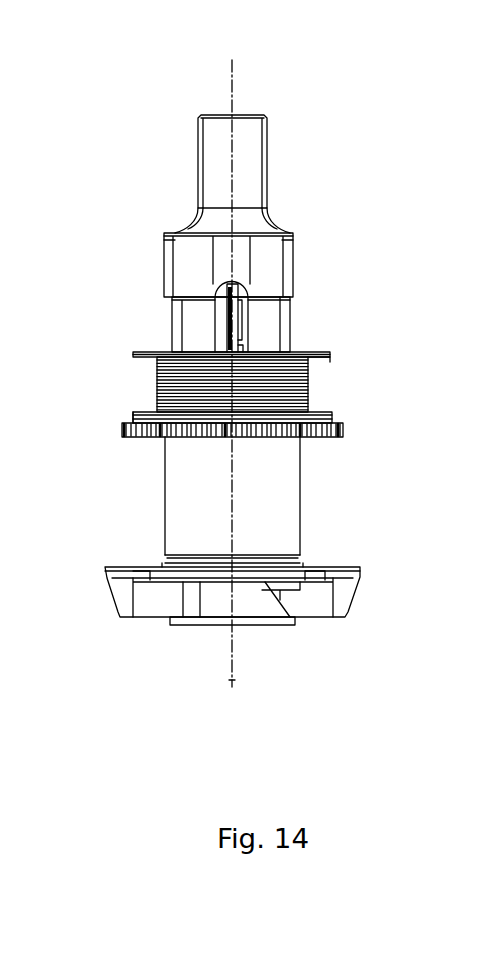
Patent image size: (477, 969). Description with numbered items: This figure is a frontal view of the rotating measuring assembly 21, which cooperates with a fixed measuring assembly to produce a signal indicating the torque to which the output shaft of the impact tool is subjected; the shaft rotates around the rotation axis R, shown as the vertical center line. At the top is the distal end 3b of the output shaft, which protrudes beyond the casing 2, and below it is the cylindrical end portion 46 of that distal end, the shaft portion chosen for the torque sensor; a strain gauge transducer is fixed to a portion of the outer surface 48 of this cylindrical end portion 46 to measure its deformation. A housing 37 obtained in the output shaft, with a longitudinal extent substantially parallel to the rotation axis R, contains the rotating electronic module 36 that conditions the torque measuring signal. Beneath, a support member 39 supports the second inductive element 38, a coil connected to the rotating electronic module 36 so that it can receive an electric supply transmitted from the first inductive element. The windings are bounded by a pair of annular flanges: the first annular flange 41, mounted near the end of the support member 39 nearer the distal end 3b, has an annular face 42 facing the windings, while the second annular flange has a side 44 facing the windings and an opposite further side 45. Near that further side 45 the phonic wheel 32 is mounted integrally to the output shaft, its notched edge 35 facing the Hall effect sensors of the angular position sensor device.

The distal end 3b is at (213, 75).
The cylindrical end portion 46 is at (143, 273).
The housing 37 is at (216, 336).
The rotating measuring assembly 21 is at (130, 322).
The outer surface 48 is at (268, 308).
The rotating electronic module 36 is at (325, 335).
The annular face 42 is at (308, 396).
The first annular flange 41 is at (320, 364).
The second inductive element 38 is at (341, 379).
The support member 39 is at (140, 397).
The side 44 is at (139, 399).
The notched edge 35 is at (122, 430).
The further side 45 is at (313, 430).
The phonic wheel 32 is at (348, 413).
The casing 2 is at (180, 489).
The rotation axis R is at (232, 680).